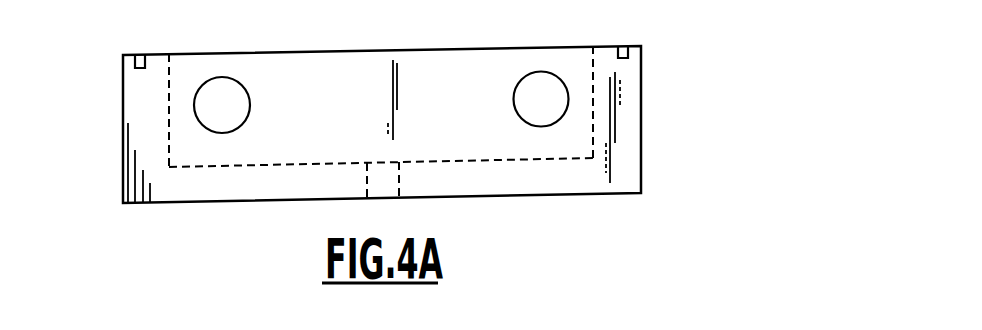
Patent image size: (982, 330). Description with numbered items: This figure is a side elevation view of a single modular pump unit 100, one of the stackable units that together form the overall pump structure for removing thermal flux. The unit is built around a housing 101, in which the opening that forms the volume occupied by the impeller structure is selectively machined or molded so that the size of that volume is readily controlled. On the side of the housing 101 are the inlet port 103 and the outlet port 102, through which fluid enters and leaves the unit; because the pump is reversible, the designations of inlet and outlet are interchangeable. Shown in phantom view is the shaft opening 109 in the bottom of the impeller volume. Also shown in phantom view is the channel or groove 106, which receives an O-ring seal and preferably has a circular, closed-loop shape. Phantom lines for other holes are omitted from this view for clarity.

The modular pump unit 100 is at (750, 88).
The housing 101 is at (642, 166).
The outlet port 102 is at (249, 98).
The inlet port 103 is at (513, 100).
The channel or groove 106 is at (130, 68).
The shaft opening 109 is at (393, 182).